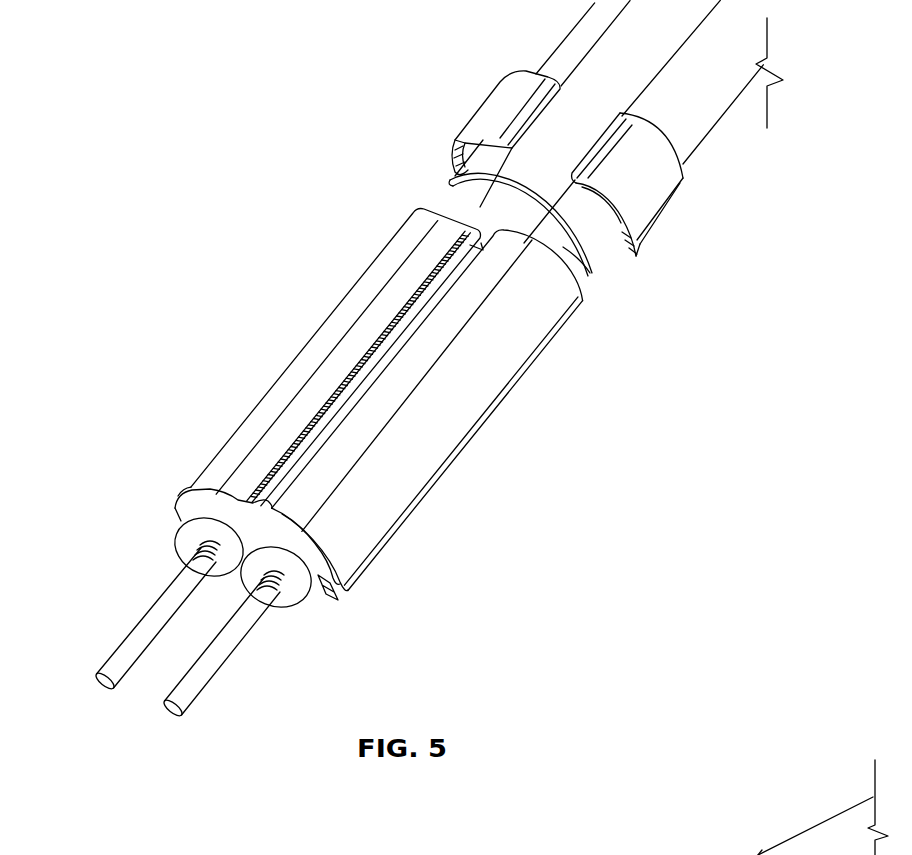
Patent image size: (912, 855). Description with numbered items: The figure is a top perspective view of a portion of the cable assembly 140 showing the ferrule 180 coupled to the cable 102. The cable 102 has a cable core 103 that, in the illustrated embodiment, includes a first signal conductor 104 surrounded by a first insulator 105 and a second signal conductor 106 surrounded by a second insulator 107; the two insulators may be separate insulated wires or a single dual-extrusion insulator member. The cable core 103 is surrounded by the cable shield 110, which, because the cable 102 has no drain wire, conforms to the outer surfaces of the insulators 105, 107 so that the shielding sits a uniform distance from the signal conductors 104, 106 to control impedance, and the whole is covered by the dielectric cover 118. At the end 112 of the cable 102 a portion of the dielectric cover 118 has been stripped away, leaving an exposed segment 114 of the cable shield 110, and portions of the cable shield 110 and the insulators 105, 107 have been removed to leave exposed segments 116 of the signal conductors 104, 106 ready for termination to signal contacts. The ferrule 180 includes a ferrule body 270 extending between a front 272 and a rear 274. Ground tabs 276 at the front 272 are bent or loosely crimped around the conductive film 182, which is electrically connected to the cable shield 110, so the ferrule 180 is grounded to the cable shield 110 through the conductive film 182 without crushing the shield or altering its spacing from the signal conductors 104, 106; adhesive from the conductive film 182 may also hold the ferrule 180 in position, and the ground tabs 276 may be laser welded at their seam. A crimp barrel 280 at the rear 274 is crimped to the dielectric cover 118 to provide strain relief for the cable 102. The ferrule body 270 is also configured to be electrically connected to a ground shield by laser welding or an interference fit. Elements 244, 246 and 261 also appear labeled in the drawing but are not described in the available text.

The cable 102 is at (512, 48).
The cable core 103 is at (268, 634).
The first signal conductor 104 is at (198, 673).
The first insulator 105 is at (315, 575).
The second signal conductor 106 is at (112, 662).
The second insulator 107 is at (210, 515).
The cable shield 110 is at (562, 245).
The end 112 is at (145, 445).
The exposed segment 114 is at (459, 192).
The exposed segments 116 is at (150, 617).
The dielectric cover 118 is at (717, 77).
The cable assembly 140 is at (237, 181).
The ferrule 180 is at (492, 421).
The conductive film 182 is at (400, 347).
The conductor 244 is at (478, 850).
The insulation 246 is at (754, 854).
The contact 261 is at (546, 846).
The ferrule body 270 is at (385, 515).
The front 272 is at (335, 603).
The rear 274 is at (683, 180).
The ground tabs 276 is at (338, 448).
The crimp barrel 280 is at (650, 215).